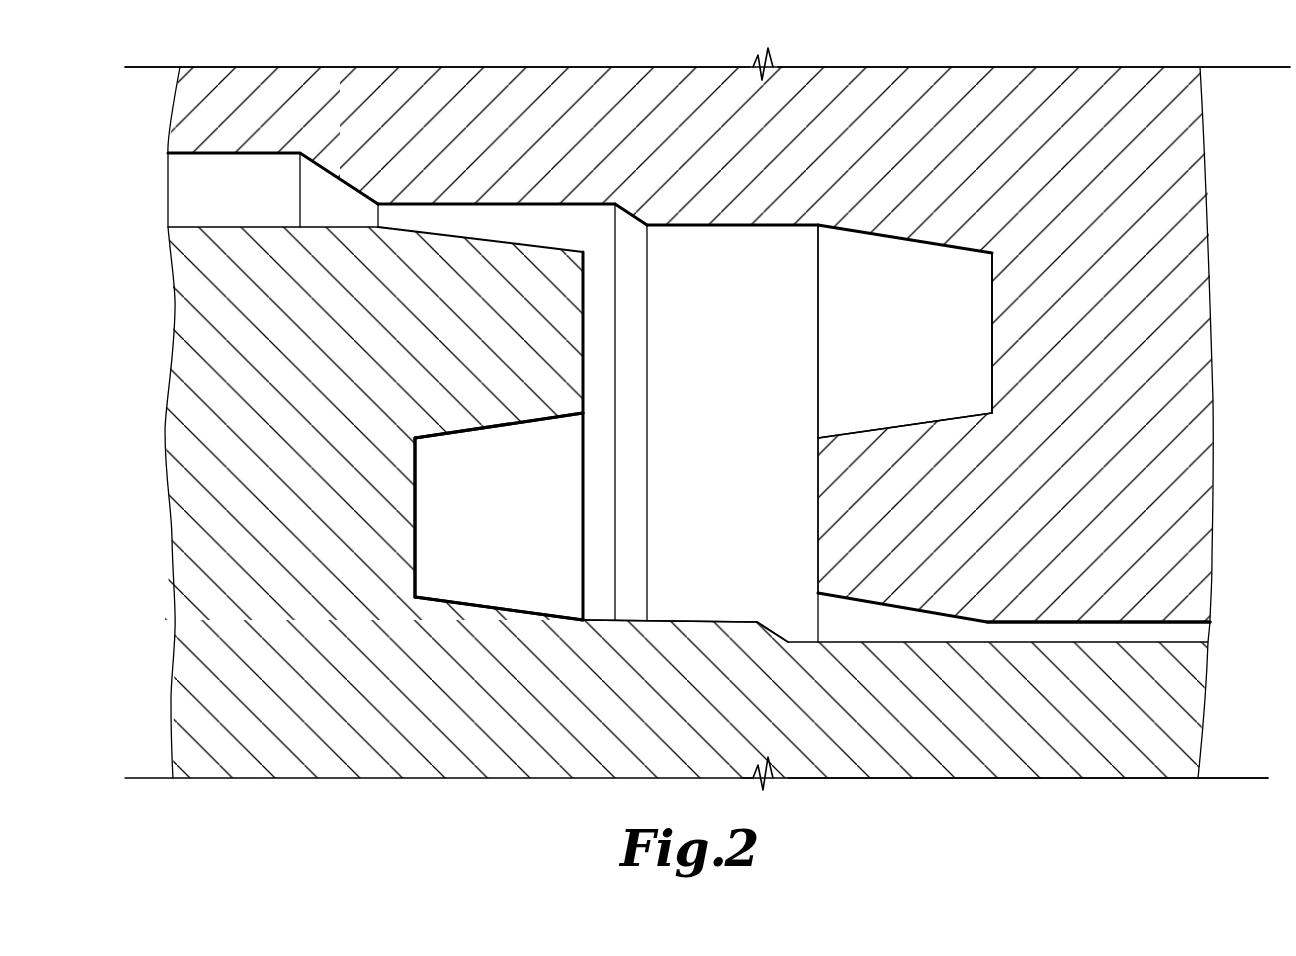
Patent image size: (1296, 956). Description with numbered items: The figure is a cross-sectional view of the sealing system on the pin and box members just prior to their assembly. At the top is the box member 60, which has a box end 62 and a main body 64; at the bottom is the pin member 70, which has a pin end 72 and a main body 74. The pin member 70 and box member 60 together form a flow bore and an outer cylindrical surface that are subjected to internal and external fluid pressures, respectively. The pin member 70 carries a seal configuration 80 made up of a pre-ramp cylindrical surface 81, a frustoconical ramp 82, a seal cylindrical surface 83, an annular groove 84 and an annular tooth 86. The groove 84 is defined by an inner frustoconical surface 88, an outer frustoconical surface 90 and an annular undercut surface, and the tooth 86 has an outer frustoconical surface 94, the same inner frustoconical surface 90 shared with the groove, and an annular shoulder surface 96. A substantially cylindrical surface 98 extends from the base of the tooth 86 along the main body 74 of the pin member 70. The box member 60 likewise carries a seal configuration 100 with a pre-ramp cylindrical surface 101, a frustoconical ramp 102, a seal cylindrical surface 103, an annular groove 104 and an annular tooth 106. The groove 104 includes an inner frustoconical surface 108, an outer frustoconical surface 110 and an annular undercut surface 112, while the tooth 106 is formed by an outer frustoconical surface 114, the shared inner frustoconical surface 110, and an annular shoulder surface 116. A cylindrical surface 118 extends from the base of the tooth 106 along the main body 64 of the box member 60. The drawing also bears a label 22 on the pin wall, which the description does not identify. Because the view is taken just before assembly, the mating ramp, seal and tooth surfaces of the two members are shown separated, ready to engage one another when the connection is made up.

The core 22 is at (405, 498).
The box member 60 is at (585, 102).
The box end 62 is at (285, 82).
The main body 64 is at (948, 82).
The pin member 70 is at (373, 756).
The pin end 72 is at (1043, 757).
The main body 74 is at (318, 238).
The seal configuration 80 is at (678, 383).
The pre-ramp cylindrical surface 81 is at (963, 642).
The frustoconical ramp 82 is at (771, 620).
The seal cylindrical surface 83 is at (712, 620).
The annular groove 84 is at (518, 510).
The annular tooth 86 is at (483, 334).
The inner frustoconical surface 88 is at (460, 602).
The outer frustoconical surface 90 is at (462, 433).
The outer frustoconical surface 94 is at (540, 246).
The annular shoulder surface 96 is at (583, 320).
The cylindrical surface 98 is at (258, 227).
The seal configuration 100 is at (790, 412).
The pre-ramp cylindrical surface 101 is at (470, 206).
The frustoconical ramp 102 is at (632, 222).
The seal cylindrical surface 103 is at (694, 228).
The annular groove 104 is at (852, 337).
The annular tooth 106 is at (886, 529).
The inner frustoconical surface 108 is at (923, 248).
The outer frustoconical surface 110 is at (925, 421).
The annular undercut surface 112 is at (992, 322).
The outer frustoconical surface 114 is at (891, 609).
The annular shoulder surface 116 is at (818, 463).
The cylindrical surface 118 is at (1207, 625).